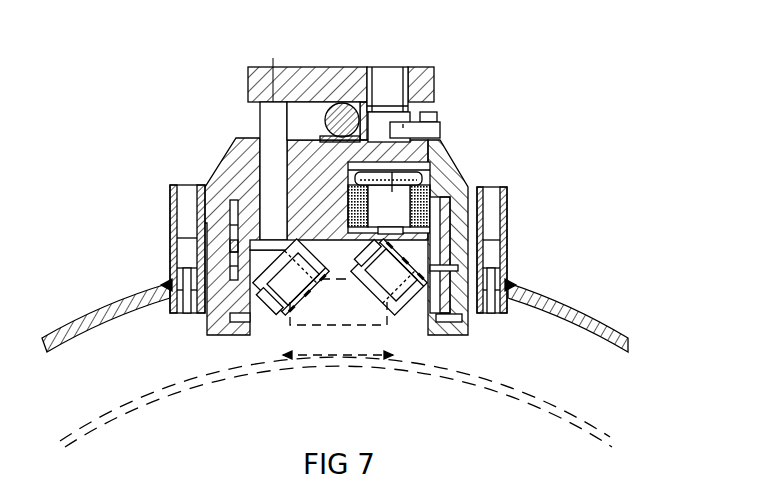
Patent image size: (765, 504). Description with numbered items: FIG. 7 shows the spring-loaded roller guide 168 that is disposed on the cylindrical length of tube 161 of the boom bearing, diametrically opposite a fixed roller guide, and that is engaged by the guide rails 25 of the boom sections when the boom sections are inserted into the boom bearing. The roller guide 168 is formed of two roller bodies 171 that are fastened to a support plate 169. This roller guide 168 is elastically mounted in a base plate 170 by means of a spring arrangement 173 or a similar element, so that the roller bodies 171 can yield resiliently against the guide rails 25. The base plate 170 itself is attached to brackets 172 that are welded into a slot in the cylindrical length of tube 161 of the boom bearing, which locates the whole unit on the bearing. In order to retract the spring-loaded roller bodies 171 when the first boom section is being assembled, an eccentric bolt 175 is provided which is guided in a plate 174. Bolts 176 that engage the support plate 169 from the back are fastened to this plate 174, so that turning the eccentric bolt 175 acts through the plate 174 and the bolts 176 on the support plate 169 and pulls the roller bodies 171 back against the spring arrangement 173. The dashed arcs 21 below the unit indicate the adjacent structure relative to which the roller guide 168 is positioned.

The rotating workpiece / drum 21 is at (465, 382).
The guide rails 25 is at (333, 292).
The tube 161 is at (574, 314).
The spring-loaded roller guide 168 is at (445, 163).
The support plate 169 is at (448, 182).
The base plate 170 is at (236, 166).
The roller bodies 171 is at (272, 312).
The brackets 172 is at (173, 258).
The spring arrangement 173 is at (396, 190).
The plate 174 is at (323, 78).
The eccentric bolt 175 is at (343, 103).
The bolts 176 is at (266, 125).